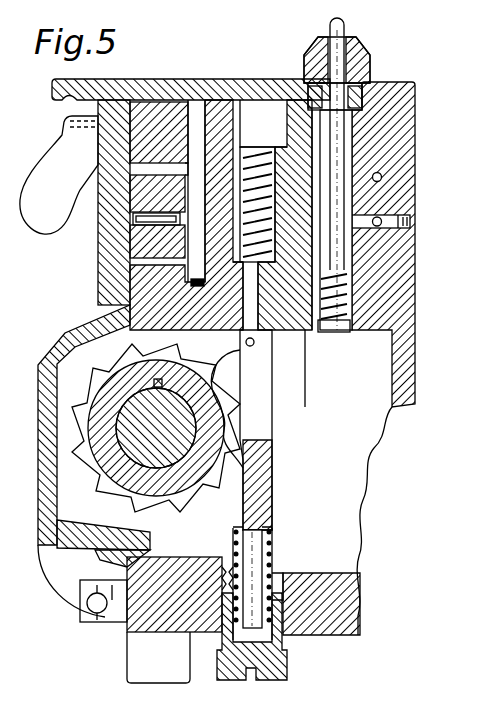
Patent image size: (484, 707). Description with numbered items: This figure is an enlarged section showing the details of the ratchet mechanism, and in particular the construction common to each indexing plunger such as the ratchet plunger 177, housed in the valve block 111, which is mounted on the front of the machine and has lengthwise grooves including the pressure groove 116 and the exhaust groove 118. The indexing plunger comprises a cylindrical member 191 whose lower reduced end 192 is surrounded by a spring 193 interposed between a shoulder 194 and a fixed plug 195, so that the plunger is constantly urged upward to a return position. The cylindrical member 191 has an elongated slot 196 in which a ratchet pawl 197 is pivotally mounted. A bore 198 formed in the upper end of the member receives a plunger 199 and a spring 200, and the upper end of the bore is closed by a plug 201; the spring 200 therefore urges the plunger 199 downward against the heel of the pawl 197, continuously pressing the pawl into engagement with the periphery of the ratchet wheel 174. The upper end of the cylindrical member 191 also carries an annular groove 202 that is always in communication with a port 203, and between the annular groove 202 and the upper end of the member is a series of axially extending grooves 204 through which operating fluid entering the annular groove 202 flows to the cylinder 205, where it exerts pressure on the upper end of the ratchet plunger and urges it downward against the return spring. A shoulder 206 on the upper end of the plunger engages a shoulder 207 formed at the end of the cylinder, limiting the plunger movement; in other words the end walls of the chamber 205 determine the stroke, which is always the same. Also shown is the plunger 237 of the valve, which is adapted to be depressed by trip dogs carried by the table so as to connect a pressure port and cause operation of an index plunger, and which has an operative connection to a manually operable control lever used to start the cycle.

The valve block 111 is at (162, 113).
The pressure groove 116 is at (310, 249).
The exhaust groove 118 is at (143, 267).
The ratchet wheel 174 is at (52, 322).
The ratchet plunger 177 is at (137, 165).
The cylindrical member 191 is at (272, 490).
The reduced end 192 is at (250, 565).
The spring 193 is at (273, 568).
The shoulder 194 is at (272, 526).
The fixed plug 195 is at (282, 659).
The elongated slot 196 is at (243, 480).
The ratchet pawl 197 is at (262, 403).
The bore 198 is at (250, 158).
The plunger 199 is at (274, 322).
The spring 200 is at (274, 154).
The plug 201 is at (240, 99).
The annular groove 202 is at (133, 255).
The port 203 is at (300, 200).
The axially extending grooves 204 is at (240, 192).
The cylinder 205 is at (264, 123).
The shoulder 206 is at (229, 156).
The shoulder 207 is at (289, 110).
The plunger 237 is at (345, 28).